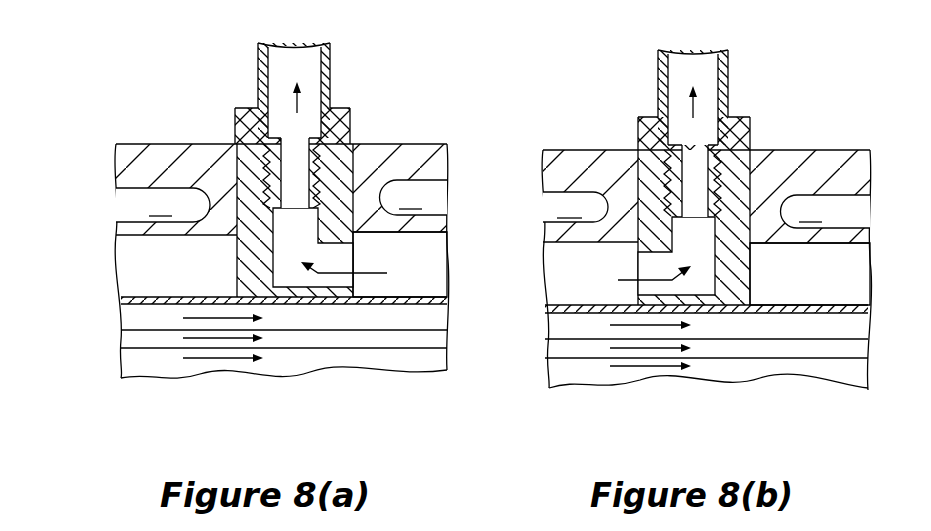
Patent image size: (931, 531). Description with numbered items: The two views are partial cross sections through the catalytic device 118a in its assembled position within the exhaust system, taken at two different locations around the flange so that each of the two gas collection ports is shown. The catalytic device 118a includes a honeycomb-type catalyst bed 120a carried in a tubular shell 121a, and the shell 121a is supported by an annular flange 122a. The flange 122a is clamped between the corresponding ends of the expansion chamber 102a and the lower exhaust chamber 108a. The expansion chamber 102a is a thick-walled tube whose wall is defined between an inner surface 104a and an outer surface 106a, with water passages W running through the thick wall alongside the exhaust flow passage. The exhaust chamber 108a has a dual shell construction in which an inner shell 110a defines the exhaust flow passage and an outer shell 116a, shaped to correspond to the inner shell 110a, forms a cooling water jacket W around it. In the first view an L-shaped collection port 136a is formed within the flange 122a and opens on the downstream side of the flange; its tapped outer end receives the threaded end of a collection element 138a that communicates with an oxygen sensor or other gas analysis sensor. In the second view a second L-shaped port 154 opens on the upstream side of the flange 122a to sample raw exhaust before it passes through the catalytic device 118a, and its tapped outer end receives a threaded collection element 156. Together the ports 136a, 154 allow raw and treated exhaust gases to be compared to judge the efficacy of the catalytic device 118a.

In FIG. 8A, the expansion chamber 102a is at (173, 144).
In FIG. 8B, the expansion chamber 102a is at (617, 150).
In FIG. 8A, the inner surface 104a is at (148, 234).
In FIG. 8B, the inner surface 104a is at (566, 243).
In FIG. 8A, the outer surface 106a is at (117, 152).
In FIG. 8B, the outer surface 106a is at (572, 156).
In FIG. 8A, the lower exhaust chamber 108a is at (431, 140).
In FIG. 8B, the lower exhaust chamber 108a is at (822, 145).
In FIG. 8A, the inner shell 110a is at (410, 226).
In FIG. 8B, the inner shell 110a is at (797, 236).
In FIG. 8A, the outer shell 116a is at (443, 157).
In FIG. 8B, the outer shell 116a is at (853, 178).
In FIG. 8A, the catalytic device 118a is at (197, 292).
In FIG. 8B, the catalytic device 118a is at (599, 298).
In FIG. 8A, the catalyst bed 120a is at (131, 337).
In FIG. 8B, the catalyst bed 120a is at (553, 345).
In FIG. 8A, the tubular shell 121a is at (122, 297).
In FIG. 8B, the tubular shell 121a is at (567, 306).
In FIG. 8A, the flange 122a is at (335, 165).
In FIG. 8B, the flange 122a is at (735, 192).
In FIG. 8A, the collection port 136a is at (247, 110).
In FIG. 8A, the collection element 138a is at (332, 44).
In FIG. 8B, the exhaust gas collection port 154 is at (738, 120).
In FIG. 8B, the collection element 156 is at (730, 63).